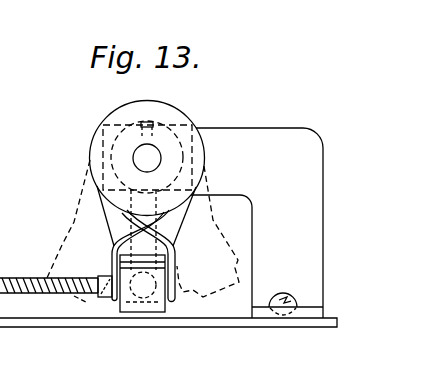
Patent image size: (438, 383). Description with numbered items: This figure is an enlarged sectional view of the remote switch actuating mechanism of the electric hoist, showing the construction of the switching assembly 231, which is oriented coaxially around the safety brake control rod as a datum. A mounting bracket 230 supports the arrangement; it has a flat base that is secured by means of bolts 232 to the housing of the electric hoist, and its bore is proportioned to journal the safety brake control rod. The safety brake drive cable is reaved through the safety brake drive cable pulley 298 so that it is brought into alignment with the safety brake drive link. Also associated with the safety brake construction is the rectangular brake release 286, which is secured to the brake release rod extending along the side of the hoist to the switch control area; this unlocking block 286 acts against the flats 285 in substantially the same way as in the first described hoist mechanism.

The mounting bracket 230 is at (249, 147).
The switching assembly 231 is at (259, 310).
The bolts 232 is at (292, 300).
The flats 285 is at (98, 241).
The brake release 286 is at (102, 158).
The safety brake drive cable pulley 298 is at (27, 278).